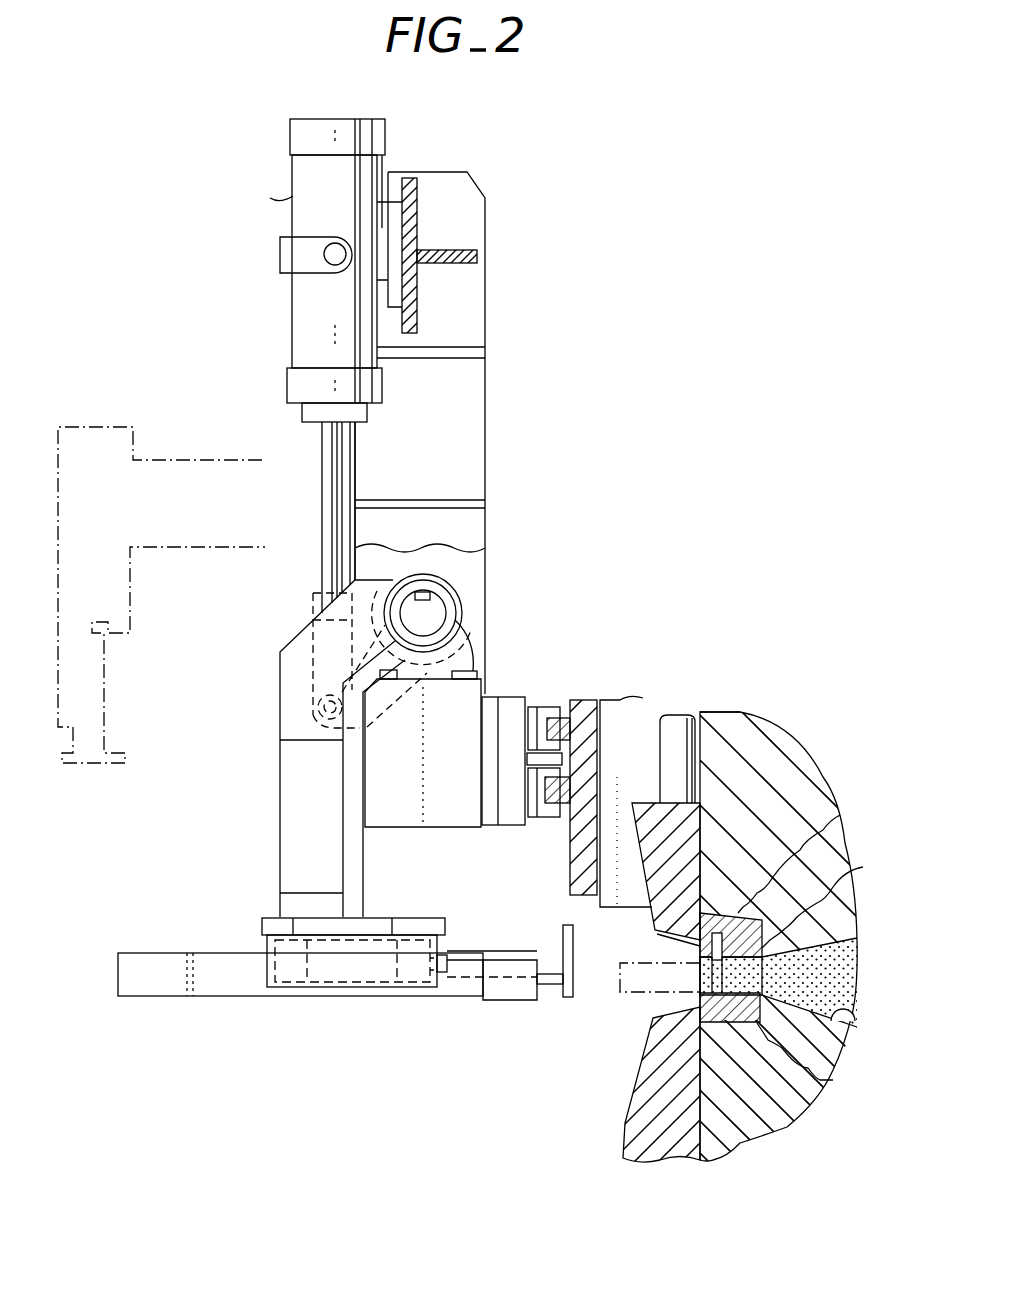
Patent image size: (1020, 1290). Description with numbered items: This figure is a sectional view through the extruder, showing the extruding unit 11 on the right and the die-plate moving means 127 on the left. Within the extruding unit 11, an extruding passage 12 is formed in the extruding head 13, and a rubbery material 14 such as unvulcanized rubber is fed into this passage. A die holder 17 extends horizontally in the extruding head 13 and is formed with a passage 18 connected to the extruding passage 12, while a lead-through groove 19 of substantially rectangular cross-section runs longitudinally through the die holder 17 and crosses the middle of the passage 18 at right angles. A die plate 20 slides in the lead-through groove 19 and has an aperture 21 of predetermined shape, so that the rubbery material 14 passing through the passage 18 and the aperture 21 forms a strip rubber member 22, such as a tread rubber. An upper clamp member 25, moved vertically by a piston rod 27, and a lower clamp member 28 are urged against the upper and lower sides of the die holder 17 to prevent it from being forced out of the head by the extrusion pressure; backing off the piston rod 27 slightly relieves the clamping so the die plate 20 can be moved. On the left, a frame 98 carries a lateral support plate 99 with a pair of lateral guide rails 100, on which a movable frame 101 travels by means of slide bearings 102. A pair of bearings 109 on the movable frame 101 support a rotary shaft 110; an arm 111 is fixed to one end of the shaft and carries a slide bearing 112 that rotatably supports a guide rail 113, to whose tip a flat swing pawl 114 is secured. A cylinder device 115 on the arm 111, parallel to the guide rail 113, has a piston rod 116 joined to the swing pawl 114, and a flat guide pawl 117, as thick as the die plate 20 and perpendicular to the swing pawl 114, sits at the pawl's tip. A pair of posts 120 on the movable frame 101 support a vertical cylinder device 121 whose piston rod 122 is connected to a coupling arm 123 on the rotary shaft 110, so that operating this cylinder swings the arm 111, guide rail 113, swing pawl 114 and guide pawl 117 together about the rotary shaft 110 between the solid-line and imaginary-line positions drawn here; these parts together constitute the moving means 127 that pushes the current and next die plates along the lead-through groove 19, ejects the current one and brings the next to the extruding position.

The extruding unit 11 is at (786, 701).
The extruding passage 12 is at (855, 1013).
The extruding head 13 is at (740, 700).
The rubbery material 14 is at (847, 960).
The die holder 17 is at (840, 815).
The passage 18 is at (833, 1080).
The lead-through groove 19 is at (867, 863).
The die plate 20 is at (713, 940).
The aperture 21 is at (705, 965).
The strip rubber member 22 is at (633, 992).
The upper clamp member 25 is at (647, 808).
The piston rod 27 is at (675, 722).
The lower clamp member 28 is at (640, 1127).
The frame 98 is at (622, 700).
The lateral support plate 99 is at (580, 702).
The lateral guide rails 100 is at (536, 706).
The movable frame 101 is at (437, 822).
The slide bearings 102 is at (540, 817).
The bearings 109 is at (462, 650).
The rotary shaft 110 is at (430, 615).
The arm 111 is at (283, 772).
The slide bearing 112 is at (265, 940).
The guide rail 113 is at (243, 990).
The swing pawl 114 is at (510, 950).
The cylinder device 115 is at (367, 982).
The piston rod 116 is at (447, 957).
The guide pawl 117 is at (563, 997).
The posts 120 is at (475, 567).
The cylinder device 121 is at (298, 203).
The piston rod 122 is at (322, 498).
The coupling arm 123 is at (393, 710).
The moving means 127 is at (507, 337).